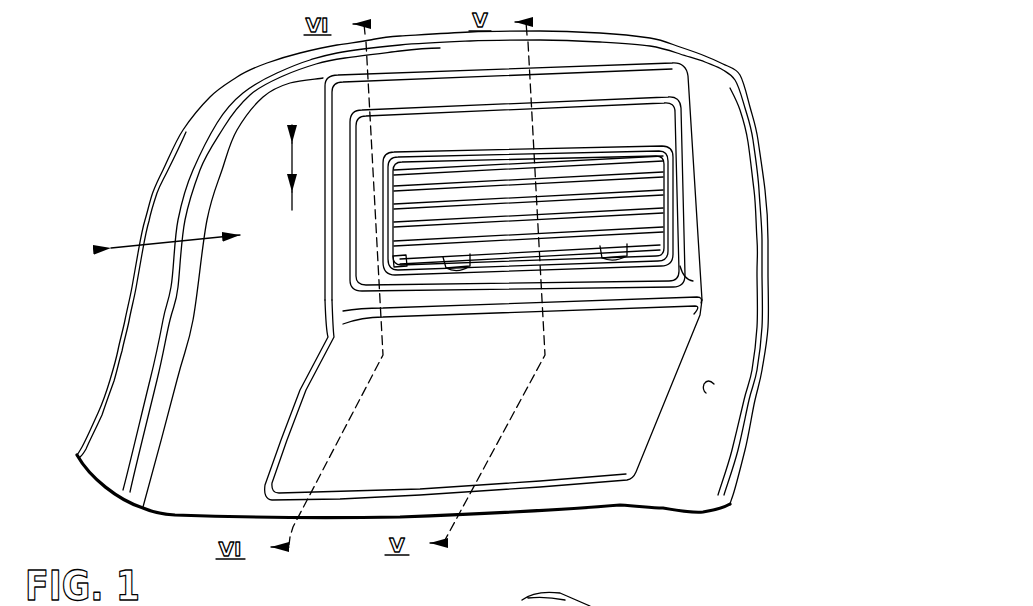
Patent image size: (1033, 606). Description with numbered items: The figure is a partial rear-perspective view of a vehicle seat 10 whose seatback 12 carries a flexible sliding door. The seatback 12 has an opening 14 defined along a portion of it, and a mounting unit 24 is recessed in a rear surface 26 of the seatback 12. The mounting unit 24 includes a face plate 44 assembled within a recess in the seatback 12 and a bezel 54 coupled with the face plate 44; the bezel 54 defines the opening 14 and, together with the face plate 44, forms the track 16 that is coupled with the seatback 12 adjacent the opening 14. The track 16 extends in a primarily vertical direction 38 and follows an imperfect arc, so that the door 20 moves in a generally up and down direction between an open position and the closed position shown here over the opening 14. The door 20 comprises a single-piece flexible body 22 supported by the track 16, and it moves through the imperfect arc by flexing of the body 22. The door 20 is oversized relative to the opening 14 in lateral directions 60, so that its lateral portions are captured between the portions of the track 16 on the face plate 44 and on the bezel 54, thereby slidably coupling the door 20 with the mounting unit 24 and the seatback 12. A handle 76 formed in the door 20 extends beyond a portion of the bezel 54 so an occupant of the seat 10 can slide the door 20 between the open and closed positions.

The vehicle seat 10 is at (744, 47).
The seatback 12 is at (779, 273).
The opening 14 is at (686, 183).
The track 16 is at (660, 192).
The door 20 is at (672, 153).
The flexible body 22 is at (587, 181).
The mounting unit 24 is at (703, 338).
The rear surface 26 is at (714, 384).
The vertical direction 38 is at (291, 182).
The face plate 44 is at (630, 407).
The bezel 54 is at (687, 278).
The lateral directions 60 is at (160, 257).
The handle 76 is at (510, 268).